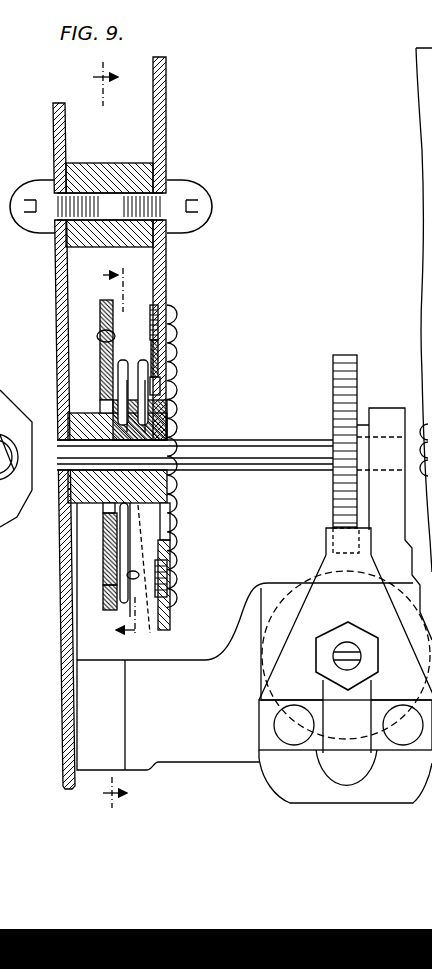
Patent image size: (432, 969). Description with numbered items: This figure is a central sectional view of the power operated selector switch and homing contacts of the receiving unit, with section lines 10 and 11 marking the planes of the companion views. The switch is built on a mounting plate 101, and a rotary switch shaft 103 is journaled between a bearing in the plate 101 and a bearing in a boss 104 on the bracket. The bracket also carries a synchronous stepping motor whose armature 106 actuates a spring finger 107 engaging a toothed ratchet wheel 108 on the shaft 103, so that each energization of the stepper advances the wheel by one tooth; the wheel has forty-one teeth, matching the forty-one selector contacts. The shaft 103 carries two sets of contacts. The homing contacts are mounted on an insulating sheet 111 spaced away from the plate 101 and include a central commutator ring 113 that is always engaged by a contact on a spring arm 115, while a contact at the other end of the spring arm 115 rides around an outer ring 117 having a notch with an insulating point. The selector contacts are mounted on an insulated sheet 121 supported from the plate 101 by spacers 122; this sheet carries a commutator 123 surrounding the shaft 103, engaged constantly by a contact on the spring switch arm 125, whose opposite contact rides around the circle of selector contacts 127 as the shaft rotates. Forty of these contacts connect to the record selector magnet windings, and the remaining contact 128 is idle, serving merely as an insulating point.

The mounting plate 101 is at (62, 645).
The rotary switch shaft 103 is at (249, 440).
The boss 104 is at (386, 407).
The armature 106 is at (262, 672).
The spring finger 107 is at (326, 556).
The toothed ratchet wheel 108 is at (333, 493).
The insulating sheet 111 is at (103, 382).
The central commutator ring 113 is at (107, 552).
The spring arm 115 is at (133, 575).
The outer ring 117 is at (107, 593).
The insulated sheet 121 is at (168, 276).
The spacers 122 is at (123, 165).
The commutator 123 is at (170, 567).
The spring switch arm 125 is at (143, 396).
The selector contacts 127 is at (170, 313).
The idle contact 128 is at (156, 581).
The section line 10- 10 is at (111, 453).
The section line 11- 11 is at (122, 435).